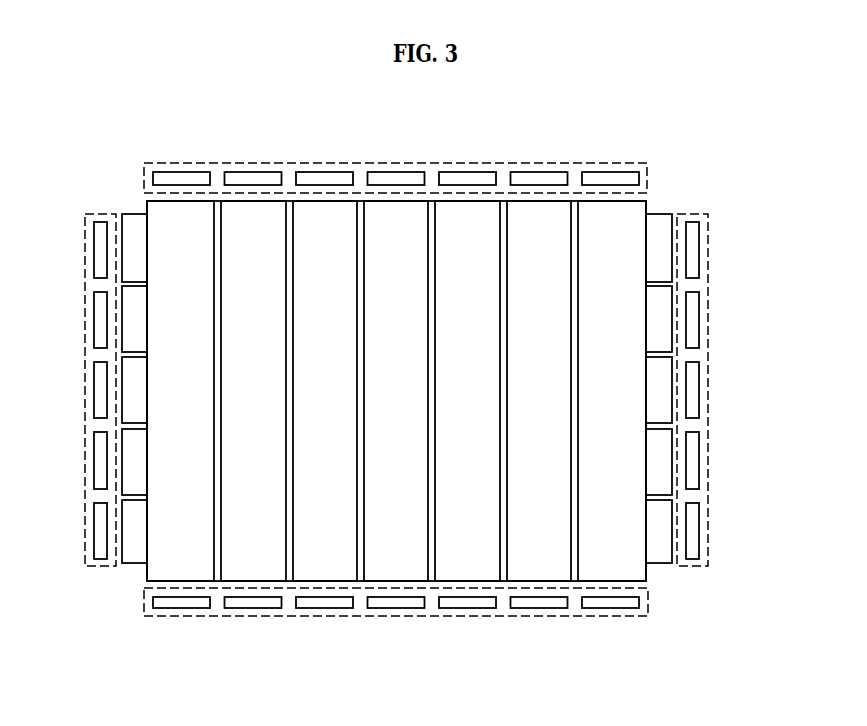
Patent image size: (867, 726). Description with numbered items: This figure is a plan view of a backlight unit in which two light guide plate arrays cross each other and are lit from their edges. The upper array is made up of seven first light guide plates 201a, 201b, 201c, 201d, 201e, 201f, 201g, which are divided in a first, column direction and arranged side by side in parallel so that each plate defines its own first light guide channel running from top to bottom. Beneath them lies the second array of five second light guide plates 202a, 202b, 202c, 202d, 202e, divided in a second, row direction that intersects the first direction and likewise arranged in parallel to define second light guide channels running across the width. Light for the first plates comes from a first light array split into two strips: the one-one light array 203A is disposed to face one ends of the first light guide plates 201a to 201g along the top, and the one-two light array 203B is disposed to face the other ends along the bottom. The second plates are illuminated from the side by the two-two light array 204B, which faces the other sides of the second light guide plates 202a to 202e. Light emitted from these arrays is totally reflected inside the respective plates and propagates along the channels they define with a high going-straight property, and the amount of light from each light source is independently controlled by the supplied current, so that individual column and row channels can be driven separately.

The first light guide plate 201a is at (214, 573).
The first light guide plate 201b is at (286, 573).
The first light guide plate 201c is at (357, 573).
The first light guide plate 201d is at (428, 573).
The first light guide plate 201e is at (500, 573).
The first light guide plate 201f is at (571, 573).
The first light guide plate 201g is at (640, 573).
The second light guide plate 202a is at (663, 273).
The second light guide plate 202b is at (663, 342).
The second light guide plate 202c is at (663, 413).
The second light guide plate 202d is at (663, 483).
The second light guide plate 202e is at (660, 557).
The 1-1 light array 203A is at (395, 162).
The 1-2 light array 203B is at (158, 617).
The 2-2 light array 204B is at (98, 212).